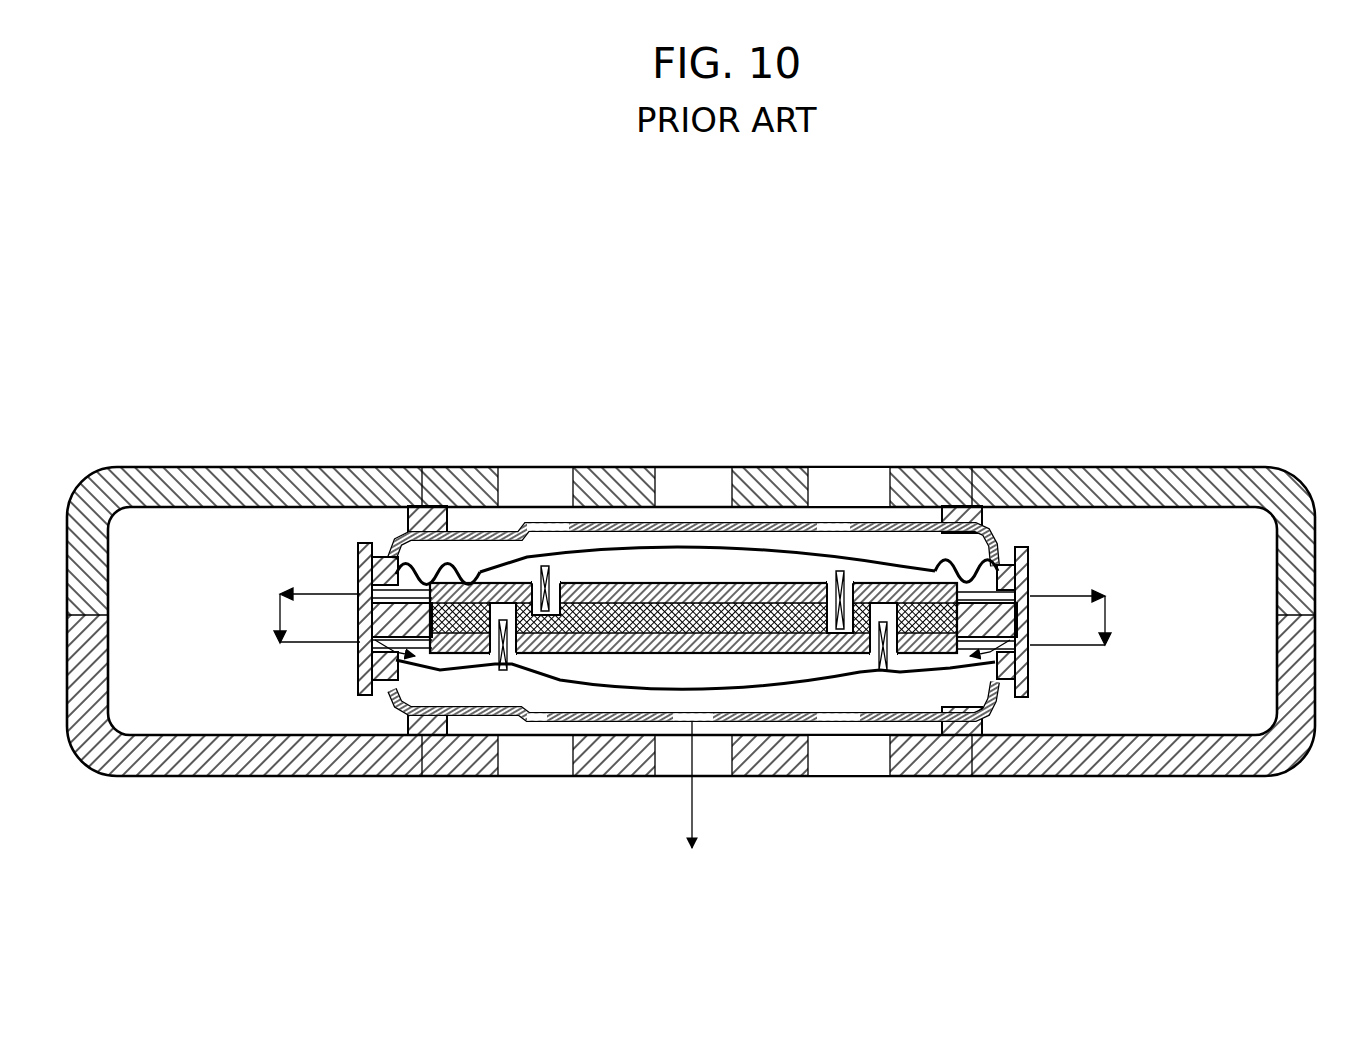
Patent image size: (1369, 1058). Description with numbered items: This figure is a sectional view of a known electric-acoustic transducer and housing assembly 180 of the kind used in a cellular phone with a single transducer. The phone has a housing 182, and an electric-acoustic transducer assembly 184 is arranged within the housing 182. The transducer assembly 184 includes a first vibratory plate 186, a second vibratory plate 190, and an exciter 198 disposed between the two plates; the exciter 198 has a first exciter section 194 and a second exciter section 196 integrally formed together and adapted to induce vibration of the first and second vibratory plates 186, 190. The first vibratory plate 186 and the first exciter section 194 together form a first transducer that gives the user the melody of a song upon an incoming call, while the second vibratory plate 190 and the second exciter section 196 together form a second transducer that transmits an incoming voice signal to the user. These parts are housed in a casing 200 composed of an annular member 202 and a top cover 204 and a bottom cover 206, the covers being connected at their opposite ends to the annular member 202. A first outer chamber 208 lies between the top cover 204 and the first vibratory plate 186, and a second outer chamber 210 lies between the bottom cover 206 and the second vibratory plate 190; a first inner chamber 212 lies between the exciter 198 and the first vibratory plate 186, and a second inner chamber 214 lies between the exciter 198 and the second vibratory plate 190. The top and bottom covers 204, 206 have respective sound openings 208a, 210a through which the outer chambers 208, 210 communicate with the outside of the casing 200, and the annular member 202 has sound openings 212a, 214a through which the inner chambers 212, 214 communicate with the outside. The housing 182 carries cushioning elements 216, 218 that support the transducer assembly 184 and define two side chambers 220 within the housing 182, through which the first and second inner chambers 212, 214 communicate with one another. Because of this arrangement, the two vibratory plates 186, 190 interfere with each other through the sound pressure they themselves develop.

The prior art linear actuator 180 is at (788, 305).
The housing 182 is at (1182, 467).
The electric-acoustic transducer assembly 184 is at (580, 520).
The first vibratory plate 186 is at (608, 540).
The second vibratory plate 190 is at (655, 672).
The first exciter section 194 is at (758, 570).
The second exciter section 196 is at (485, 564).
The exciter 198 is at (673, 570).
The casing 200 is at (789, 514).
The annular member 202 is at (1020, 542).
The top cover 204 is at (925, 530).
The bottom cover 206 is at (748, 719).
The first outer chamber 208 is at (836, 534).
The sound opening 208a is at (855, 498).
The second outer chamber 210 is at (800, 727).
The sound opening 210a is at (537, 716).
The first inner chamber 212 is at (712, 570).
The sound opening 212a is at (357, 580).
The second inner chamber 214 is at (605, 700).
The sound opening 214a is at (357, 655).
The cushioning element 216 is at (425, 519).
The cushioning element 218 is at (425, 723).
The side chamber 220 is at (215, 639).